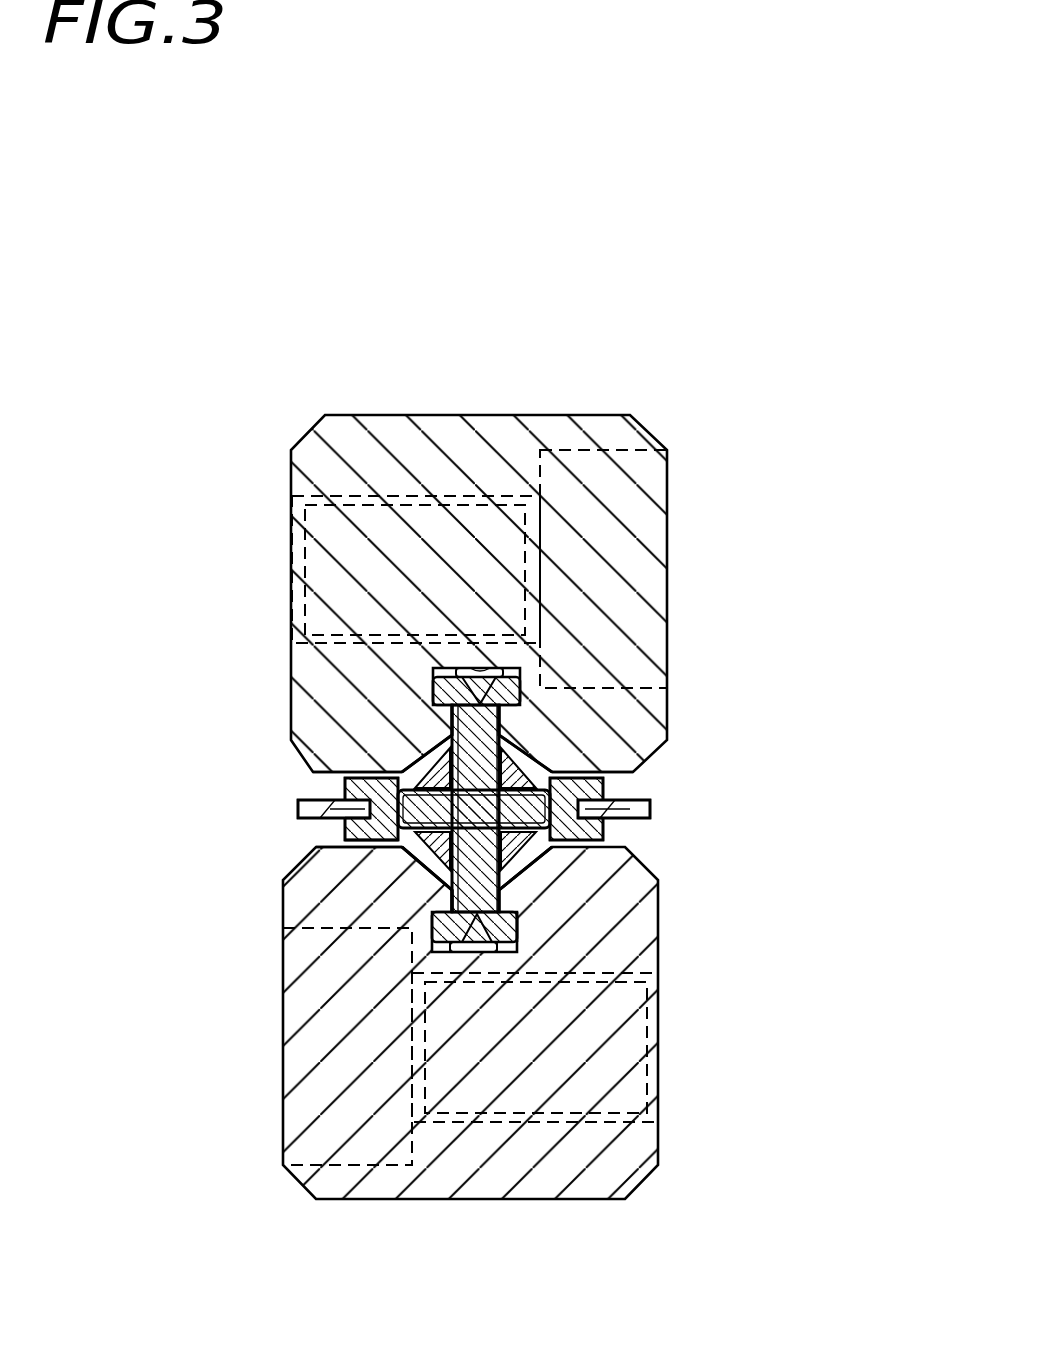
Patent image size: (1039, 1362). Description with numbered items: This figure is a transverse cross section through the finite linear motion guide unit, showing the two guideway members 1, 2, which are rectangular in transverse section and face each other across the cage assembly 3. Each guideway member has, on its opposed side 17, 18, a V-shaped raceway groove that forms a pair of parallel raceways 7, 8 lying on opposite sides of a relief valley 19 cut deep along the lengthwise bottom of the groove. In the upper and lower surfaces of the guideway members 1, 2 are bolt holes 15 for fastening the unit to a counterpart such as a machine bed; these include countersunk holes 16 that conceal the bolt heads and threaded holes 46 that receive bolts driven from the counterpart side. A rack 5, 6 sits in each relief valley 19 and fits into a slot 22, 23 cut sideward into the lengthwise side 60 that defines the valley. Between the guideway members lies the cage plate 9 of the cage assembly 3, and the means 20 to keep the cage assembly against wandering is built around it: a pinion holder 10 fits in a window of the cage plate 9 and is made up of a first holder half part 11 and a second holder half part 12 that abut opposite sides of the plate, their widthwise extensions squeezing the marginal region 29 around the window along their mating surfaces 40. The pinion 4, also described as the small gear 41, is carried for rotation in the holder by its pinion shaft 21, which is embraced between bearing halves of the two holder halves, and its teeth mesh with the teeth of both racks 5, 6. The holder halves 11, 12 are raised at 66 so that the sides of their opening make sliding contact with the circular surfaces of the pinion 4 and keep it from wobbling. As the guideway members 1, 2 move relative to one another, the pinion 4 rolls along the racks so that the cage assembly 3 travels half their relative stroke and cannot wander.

The guideway member 1 is at (480, 455).
The guideway member 2 is at (455, 1175).
The cage assembly 3 is at (300, 815).
The pinion 4 is at (485, 888).
The rack 5 is at (522, 680).
The rack 6 is at (432, 925).
The raceway 7 is at (552, 770).
The raceway 8 is at (430, 860).
The cage plate 9 is at (650, 810).
The pinion holder 10 is at (338, 800).
The first holder half part 11 is at (425, 772).
The second holder half part 12 is at (360, 832).
The bolt holes 15 is at (345, 492).
The countersunk holes 16 is at (660, 462).
The side 17 is at (338, 794).
The side 18 is at (400, 848).
The relief valley 19 is at (503, 670).
The means to keep the cage assembly against wandering 20 is at (668, 802).
The pinion shaft 21 is at (430, 765).
The slot 22 is at (440, 680).
The slot 23 is at (500, 950).
The marginal region 29 is at (355, 820).
The mating surfaces 40 is at (410, 880).
The pinion or small gear 41 is at (525, 925).
The threaded holes 46 is at (345, 492).
The lengthwise sides 60 is at (452, 905).
The raised portion 66 is at (452, 708).